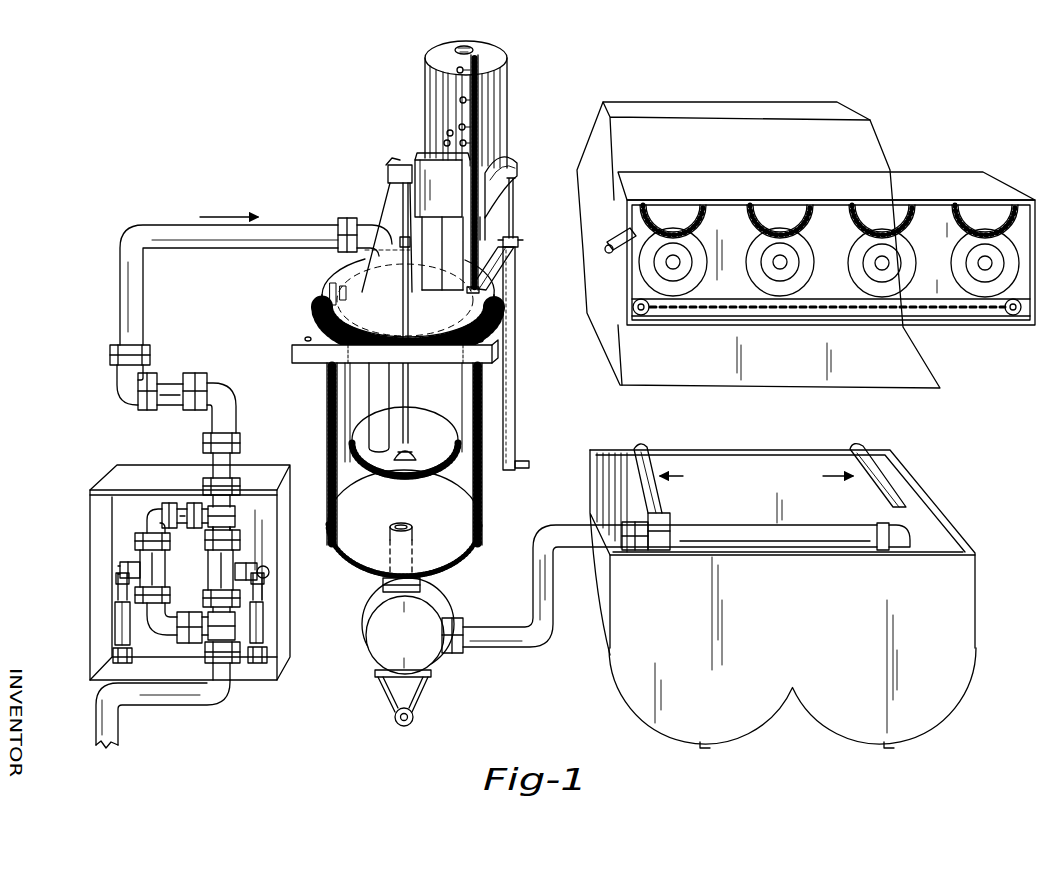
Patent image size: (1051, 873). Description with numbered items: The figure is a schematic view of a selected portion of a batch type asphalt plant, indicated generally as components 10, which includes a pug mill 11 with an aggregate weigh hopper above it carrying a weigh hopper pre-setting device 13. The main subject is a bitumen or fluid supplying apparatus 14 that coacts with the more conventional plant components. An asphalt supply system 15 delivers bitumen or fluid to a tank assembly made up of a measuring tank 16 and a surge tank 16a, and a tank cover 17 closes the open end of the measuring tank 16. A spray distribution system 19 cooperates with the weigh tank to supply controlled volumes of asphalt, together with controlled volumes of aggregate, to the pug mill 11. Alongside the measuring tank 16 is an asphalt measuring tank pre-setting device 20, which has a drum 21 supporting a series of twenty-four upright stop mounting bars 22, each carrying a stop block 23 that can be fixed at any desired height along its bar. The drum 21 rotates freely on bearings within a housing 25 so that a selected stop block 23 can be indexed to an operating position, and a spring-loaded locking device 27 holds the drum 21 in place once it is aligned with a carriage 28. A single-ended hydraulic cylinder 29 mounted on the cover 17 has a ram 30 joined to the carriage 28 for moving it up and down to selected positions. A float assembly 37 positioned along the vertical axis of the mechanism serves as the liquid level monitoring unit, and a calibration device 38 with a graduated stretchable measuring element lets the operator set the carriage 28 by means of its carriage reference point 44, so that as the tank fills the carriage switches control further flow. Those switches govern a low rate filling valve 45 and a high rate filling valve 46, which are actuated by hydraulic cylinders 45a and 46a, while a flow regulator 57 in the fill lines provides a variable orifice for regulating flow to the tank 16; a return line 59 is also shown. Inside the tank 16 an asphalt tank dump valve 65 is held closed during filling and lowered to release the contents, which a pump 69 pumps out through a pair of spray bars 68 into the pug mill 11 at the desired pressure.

The batch type asphalt plant components 10 is at (137, 180).
The pug mill 11 is at (955, 605).
The weigh hopper pre-setting device 13 is at (1003, 190).
The bitumen or fluid supplying apparatus 14 is at (401, 136).
The asphalt supply system 15 is at (115, 313).
The measuring tank 16 is at (461, 422).
The surge tank 16a is at (483, 502).
The tank cover 17 is at (341, 283).
The spray distribution system 19 is at (506, 644).
The asphalt measuring tank pre-setting device 20 is at (510, 53).
The drum 21 is at (452, 275).
The stop mounting bars 22 is at (490, 115).
The stop block 23 is at (490, 127).
The housing 25 is at (438, 52).
The spring-loaded locking device 27 is at (518, 231).
The carriage 28 is at (513, 173).
The single-ended hydraulic cylinder 29 is at (510, 368).
The ram 30 is at (513, 205).
The float assembly 37 is at (410, 402).
The calibration device 38 is at (481, 268).
The carriage reference point 44 is at (486, 171).
The low rate filling valve 45 is at (142, 560).
The hydraulic cylinder 45a is at (122, 626).
The high rate filling valve 46 is at (223, 568).
The hydraulic cylinder 46a is at (258, 623).
The flow regulator 57 is at (183, 498).
The return pipe 59 is at (118, 733).
The asphalt tank dump valve 65 is at (402, 458).
The spray bars 68 is at (648, 450).
The pump 69 is at (392, 652).